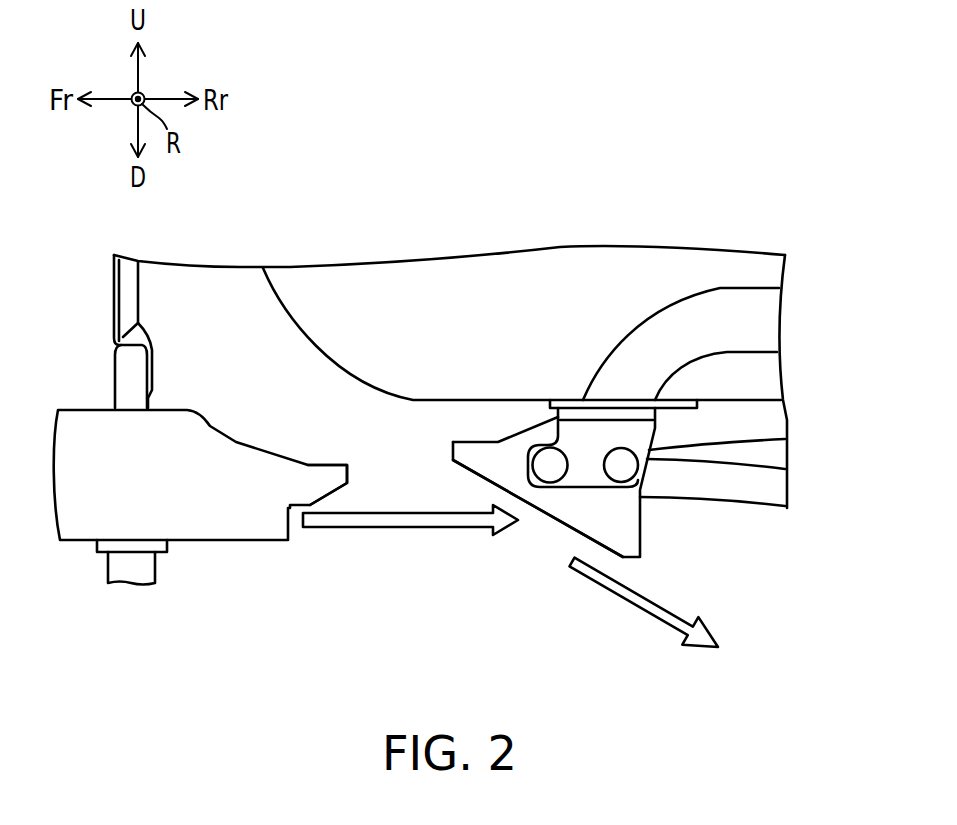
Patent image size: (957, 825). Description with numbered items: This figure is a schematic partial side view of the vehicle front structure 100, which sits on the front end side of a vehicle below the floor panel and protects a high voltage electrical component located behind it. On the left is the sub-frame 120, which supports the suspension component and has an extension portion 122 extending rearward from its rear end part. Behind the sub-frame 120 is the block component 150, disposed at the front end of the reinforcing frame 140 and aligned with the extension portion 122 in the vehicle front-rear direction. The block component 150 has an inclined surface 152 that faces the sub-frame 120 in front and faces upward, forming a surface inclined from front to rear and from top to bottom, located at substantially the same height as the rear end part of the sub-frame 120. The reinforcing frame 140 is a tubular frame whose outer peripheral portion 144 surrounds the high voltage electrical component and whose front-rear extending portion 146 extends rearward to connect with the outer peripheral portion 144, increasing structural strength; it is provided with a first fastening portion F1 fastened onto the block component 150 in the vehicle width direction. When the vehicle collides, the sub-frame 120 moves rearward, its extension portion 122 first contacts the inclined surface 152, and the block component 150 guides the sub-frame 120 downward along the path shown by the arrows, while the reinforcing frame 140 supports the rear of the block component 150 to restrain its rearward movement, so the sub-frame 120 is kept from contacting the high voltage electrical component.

The vehicle front structure 100 is at (843, 686).
The sub-frame 120 is at (215, 513).
The extension portion 122 is at (302, 478).
The reinforcing frame 140 is at (740, 276).
The outer peripheral portion 144 is at (763, 322).
The front-rear extending portion 146 is at (778, 455).
The block component 150 is at (630, 532).
The inclined surface 152 is at (553, 525).
The first fastening portion F1 is at (603, 414).